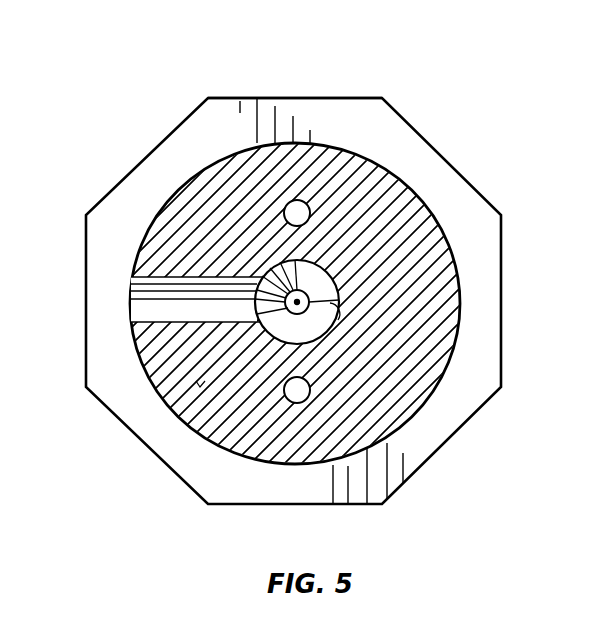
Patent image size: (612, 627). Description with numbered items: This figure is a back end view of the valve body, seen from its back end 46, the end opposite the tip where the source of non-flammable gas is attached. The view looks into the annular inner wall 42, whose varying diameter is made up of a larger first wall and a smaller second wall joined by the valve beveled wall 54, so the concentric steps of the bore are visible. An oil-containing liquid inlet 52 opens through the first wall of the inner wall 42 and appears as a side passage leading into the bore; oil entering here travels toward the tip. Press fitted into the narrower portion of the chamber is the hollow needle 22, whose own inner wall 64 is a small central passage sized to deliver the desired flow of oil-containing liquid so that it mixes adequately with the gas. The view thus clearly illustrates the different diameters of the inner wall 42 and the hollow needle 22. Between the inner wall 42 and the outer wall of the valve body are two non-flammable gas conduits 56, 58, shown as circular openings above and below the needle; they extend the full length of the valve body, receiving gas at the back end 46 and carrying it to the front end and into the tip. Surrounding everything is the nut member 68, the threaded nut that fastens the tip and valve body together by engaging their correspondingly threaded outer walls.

The hollow needle 22 is at (290, 322).
The inner wall 42 is at (335, 312).
The back end 46 is at (148, 441).
The oil-containing liquid inlet 52 is at (138, 310).
The valve beveled wall 54 is at (313, 273).
The non-flammable gas conduit 56 is at (300, 212).
The non-flammable gas conduit 58 is at (300, 391).
The inner wall 64 is at (300, 302).
The nut member 68 is at (318, 97).